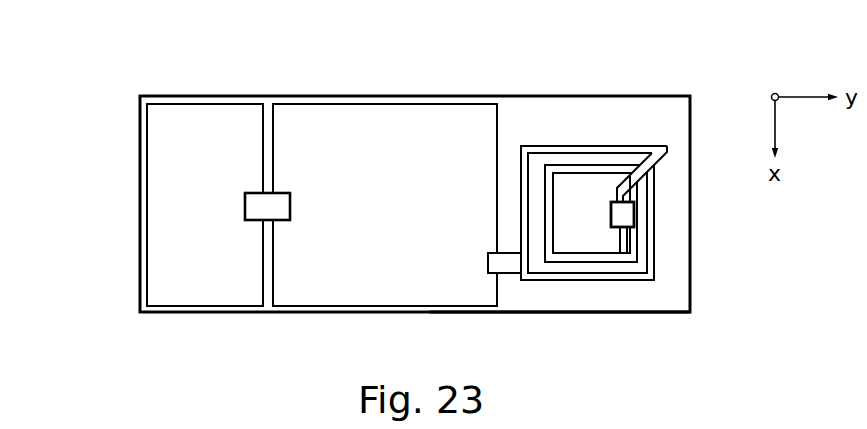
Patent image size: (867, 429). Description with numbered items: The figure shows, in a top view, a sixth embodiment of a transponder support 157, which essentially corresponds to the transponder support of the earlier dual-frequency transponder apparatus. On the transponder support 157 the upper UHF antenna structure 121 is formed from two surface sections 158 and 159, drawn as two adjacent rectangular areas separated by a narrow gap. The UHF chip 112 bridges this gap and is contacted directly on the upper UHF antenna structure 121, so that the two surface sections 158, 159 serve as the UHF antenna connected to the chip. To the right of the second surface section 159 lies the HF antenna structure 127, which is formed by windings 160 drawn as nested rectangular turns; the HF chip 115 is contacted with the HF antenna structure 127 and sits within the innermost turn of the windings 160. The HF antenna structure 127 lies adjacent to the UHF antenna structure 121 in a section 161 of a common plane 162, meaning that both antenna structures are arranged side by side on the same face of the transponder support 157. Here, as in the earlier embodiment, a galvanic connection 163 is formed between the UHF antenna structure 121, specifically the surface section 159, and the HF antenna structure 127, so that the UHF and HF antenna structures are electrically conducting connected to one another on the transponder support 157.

The transponder support 157 is at (430, 211).
The surface section 158 is at (192, 108).
The upper UHF antenna structure 121 is at (269, 78).
The surface section 159 is at (289, 168).
The UHF chip 112 is at (253, 216).
The galvanic connection 163 is at (493, 268).
The HF antenna structure 127 is at (637, 159).
The windings 160 is at (665, 206).
The HF chip 115 is at (620, 203).
The section 161 is at (675, 295).
The common plane 162 is at (595, 322).